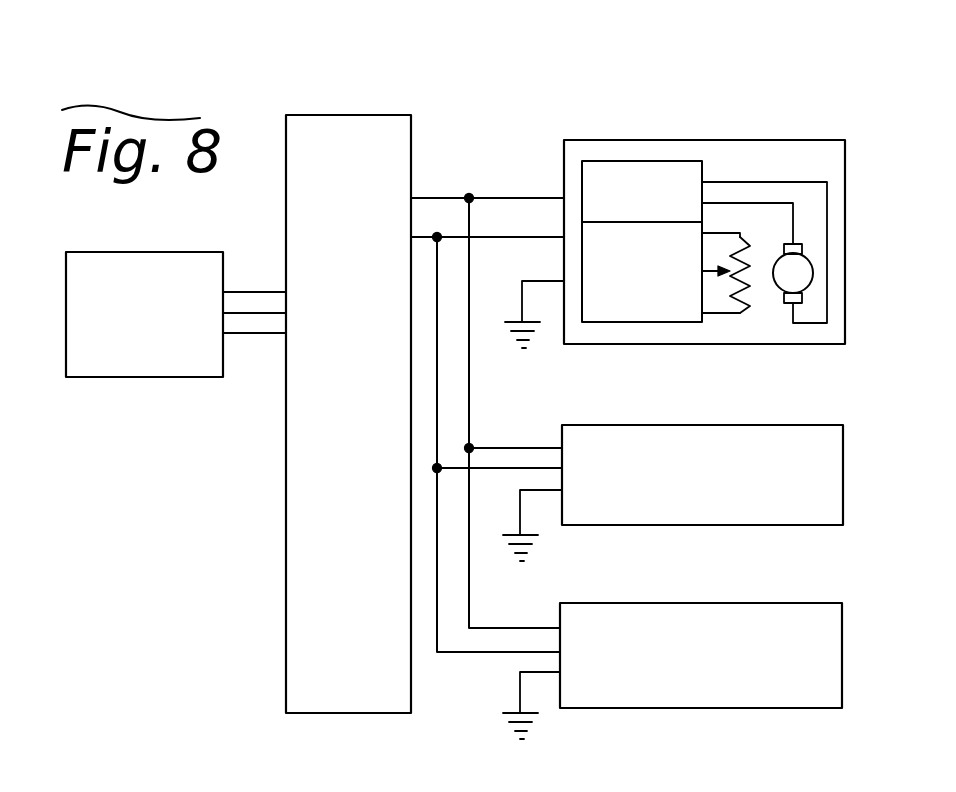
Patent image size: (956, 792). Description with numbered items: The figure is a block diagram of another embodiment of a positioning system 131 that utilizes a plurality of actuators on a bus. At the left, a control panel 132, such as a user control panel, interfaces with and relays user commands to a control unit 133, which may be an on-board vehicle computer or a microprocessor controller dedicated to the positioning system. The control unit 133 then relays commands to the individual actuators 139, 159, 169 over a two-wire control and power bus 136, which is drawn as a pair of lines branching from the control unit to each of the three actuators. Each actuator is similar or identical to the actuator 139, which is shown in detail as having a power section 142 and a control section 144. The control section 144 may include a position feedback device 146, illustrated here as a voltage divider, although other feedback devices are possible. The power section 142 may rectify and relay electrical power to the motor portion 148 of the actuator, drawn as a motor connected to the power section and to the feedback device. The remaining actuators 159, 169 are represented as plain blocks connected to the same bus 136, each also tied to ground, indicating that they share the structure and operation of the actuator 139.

The positioning system 131 is at (144, 466).
The control panel 132 is at (172, 252).
The control unit 133 is at (411, 136).
The 2-wire control and power bus 136 is at (533, 170).
The actuator 139 is at (775, 140).
The power section 142 is at (660, 200).
The control section 144 is at (658, 282).
The position feedback device 146 is at (748, 292).
The motor portion 148 is at (812, 263).
The actuator 159 is at (617, 425).
The actuator 169 is at (688, 562).